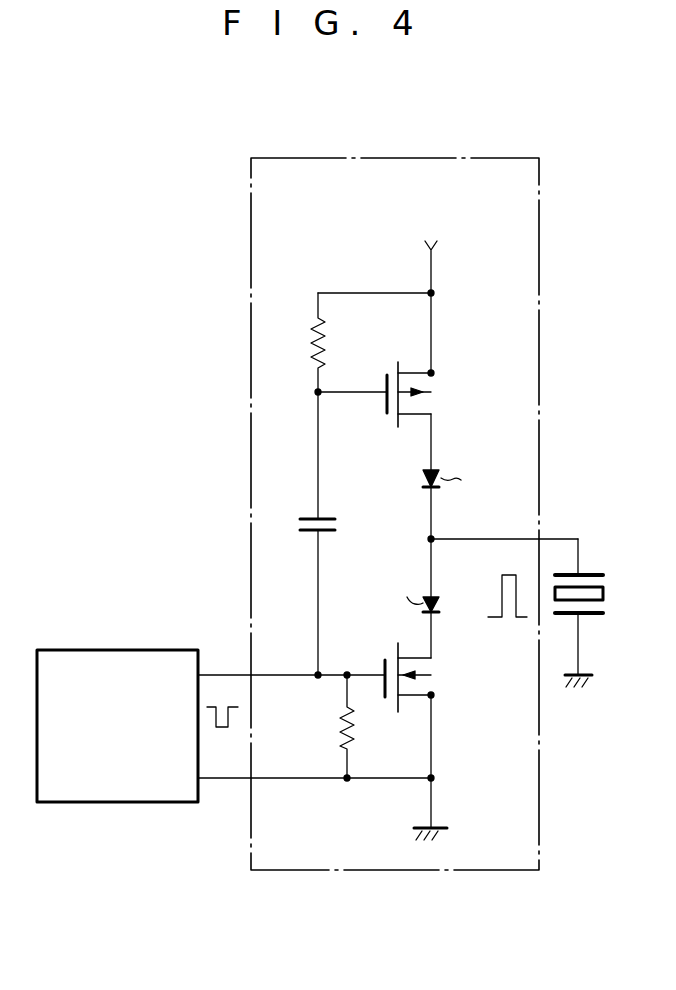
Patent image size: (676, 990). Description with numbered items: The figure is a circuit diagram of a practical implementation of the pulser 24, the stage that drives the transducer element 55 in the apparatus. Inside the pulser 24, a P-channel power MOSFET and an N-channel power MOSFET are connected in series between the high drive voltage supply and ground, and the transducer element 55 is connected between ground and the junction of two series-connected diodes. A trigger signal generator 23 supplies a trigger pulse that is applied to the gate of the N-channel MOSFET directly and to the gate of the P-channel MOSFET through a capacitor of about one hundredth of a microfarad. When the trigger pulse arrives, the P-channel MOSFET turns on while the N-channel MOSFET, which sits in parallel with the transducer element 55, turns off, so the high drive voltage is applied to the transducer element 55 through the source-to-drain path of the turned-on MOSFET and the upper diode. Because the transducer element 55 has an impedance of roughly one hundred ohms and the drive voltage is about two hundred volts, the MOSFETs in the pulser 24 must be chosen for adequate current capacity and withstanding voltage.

The trigger signal generator 23 is at (90, 665).
The pulser 24 is at (252, 219).
The transducer element 55 is at (595, 566).